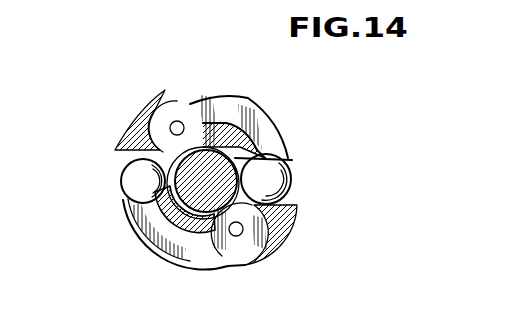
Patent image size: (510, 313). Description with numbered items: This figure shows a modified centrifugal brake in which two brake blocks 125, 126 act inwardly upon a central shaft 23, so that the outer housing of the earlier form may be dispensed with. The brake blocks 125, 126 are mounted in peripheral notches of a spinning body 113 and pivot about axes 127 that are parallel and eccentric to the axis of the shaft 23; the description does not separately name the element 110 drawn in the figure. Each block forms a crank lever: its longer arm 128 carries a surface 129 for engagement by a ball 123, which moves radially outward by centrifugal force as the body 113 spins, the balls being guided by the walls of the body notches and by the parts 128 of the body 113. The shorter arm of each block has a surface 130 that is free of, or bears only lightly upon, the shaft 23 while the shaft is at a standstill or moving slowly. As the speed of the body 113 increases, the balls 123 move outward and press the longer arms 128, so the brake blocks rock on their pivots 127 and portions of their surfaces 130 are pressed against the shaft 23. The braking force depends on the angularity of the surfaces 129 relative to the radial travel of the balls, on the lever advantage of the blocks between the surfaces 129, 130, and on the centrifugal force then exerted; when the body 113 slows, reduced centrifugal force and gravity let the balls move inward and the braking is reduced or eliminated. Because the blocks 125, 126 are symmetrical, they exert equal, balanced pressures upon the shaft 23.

The shaft 23 is at (186, 179).
The body 110 is at (263, 142).
The body 113 is at (182, 210).
The ball 123 is at (278, 175).
The brake block 125 is at (249, 100).
The brake block 126 is at (188, 267).
The pivot axis 127 is at (175, 124).
The longer arm 128 is at (130, 133).
The engagement surface 129 is at (288, 160).
The braking surface 130 is at (188, 133).